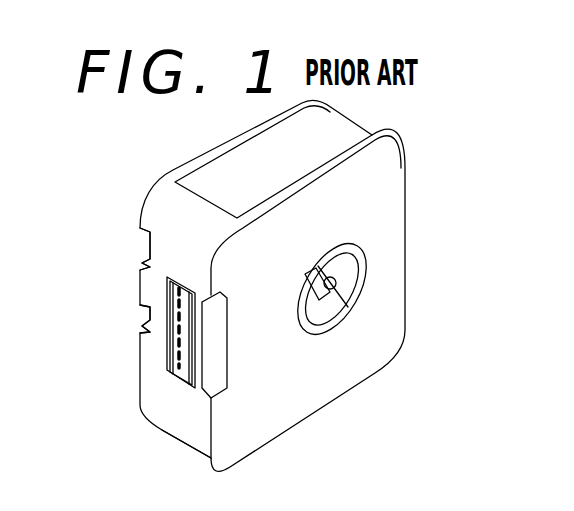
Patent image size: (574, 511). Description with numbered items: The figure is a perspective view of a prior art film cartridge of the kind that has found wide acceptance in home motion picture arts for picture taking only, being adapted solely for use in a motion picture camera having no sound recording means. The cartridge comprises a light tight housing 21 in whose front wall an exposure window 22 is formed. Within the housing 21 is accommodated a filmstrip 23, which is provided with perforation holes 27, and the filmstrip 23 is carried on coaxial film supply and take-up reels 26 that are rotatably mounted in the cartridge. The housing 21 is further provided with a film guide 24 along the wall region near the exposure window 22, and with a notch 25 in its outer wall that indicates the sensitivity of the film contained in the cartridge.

The light tight housing 21 is at (277, 420).
The exposure window 22 is at (172, 340).
The filmstrip 23 is at (181, 376).
The film guide 24 is at (140, 315).
The notch 25 is at (143, 240).
The coaxial film supply and take-up reels 26 is at (334, 262).
The perforation holes 27 is at (188, 289).